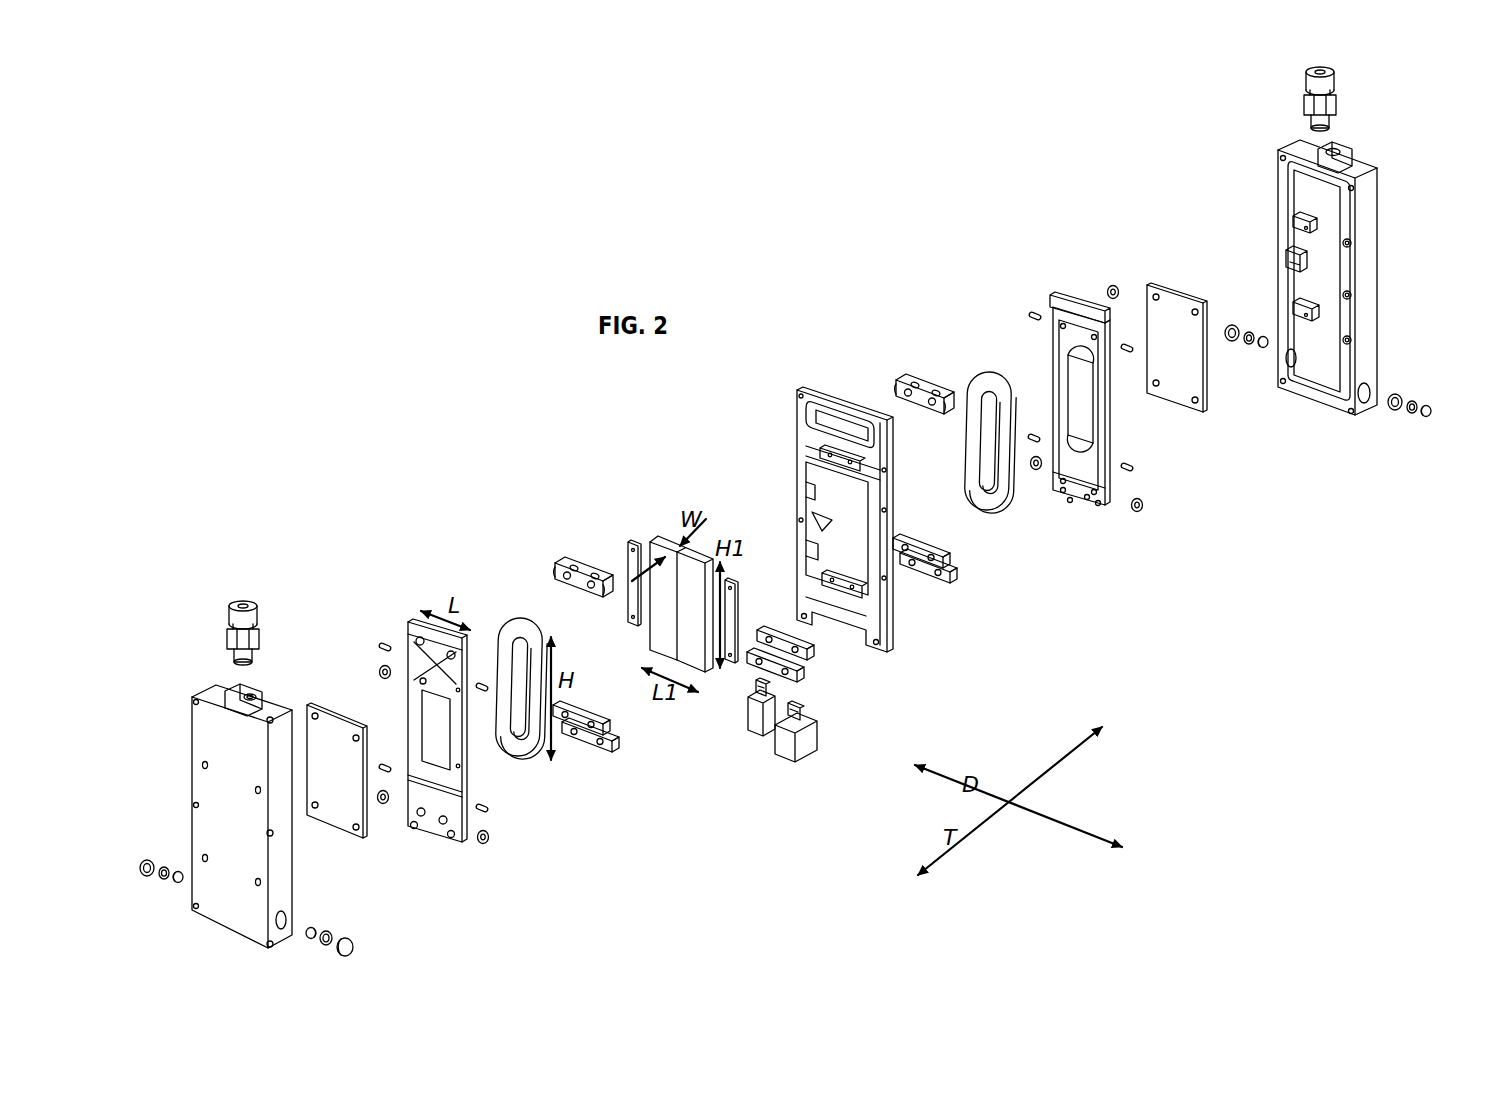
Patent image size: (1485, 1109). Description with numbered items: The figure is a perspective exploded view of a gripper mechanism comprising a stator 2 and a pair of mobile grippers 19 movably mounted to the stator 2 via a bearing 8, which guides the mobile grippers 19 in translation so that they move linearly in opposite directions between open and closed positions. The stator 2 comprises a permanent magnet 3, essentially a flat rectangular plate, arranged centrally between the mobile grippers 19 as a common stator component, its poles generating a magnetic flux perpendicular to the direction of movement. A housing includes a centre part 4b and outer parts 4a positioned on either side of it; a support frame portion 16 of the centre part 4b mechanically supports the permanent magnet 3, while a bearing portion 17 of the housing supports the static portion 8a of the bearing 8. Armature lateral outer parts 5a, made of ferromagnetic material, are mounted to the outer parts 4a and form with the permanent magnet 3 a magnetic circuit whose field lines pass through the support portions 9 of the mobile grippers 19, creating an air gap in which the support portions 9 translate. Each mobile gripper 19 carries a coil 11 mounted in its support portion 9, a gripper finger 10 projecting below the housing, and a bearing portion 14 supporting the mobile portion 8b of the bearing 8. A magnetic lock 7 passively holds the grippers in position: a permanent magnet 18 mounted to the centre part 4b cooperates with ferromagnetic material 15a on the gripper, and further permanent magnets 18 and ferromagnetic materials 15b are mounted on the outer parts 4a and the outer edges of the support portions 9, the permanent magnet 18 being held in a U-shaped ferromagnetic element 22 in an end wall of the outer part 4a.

The stator 2 is at (784, 531).
The permanent magnet 3 is at (667, 530).
The outer part of housing 4a is at (281, 690).
The centre part of housing 4b is at (812, 487).
The armature lateral outer part 5a is at (341, 700).
The magnetic lock 7 is at (785, 616).
The bearing 8 is at (761, 569).
The static portion of bearing 8a is at (586, 718).
The mobile portion of bearing 8b is at (600, 753).
The support portion 9 is at (431, 852).
The gripper finger 10 is at (789, 746).
The coil 11 is at (528, 766).
The bearing portion of support portion 14 is at (1084, 492).
The ferromagnetic material 15a is at (778, 688).
The ferromagnetic material 15b is at (386, 804).
The support frame portion 16 is at (836, 523).
The bearing portion of housing 17 is at (838, 598).
The permanent magnet of magnetic lock 18 is at (181, 872).
The mobile gripper 19 is at (390, 641).
The U-shaped ferromagnetic element 22 is at (144, 876).